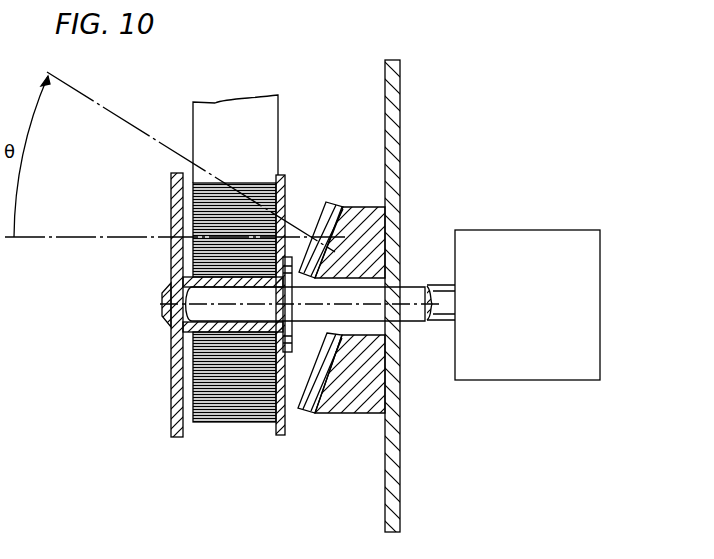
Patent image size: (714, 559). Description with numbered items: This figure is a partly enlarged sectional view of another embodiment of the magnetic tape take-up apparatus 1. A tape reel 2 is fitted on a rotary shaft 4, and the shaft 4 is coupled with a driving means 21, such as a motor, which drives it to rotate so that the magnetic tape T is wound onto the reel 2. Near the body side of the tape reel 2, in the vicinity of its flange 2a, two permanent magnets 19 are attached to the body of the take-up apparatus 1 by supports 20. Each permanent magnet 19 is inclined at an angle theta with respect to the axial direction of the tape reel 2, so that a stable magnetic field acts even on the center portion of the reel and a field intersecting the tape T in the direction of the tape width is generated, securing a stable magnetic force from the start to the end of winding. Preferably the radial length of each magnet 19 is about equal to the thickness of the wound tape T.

The take-up apparatus 1 is at (397, 428).
The tape reel 2 is at (199, 324).
The flange 2a is at (277, 432).
The rotary shaft 4 is at (411, 326).
The permanent magnet 19 is at (327, 203).
The support 20 is at (362, 217).
The driving means 21 is at (561, 230).
The magnetic tape T is at (218, 106).